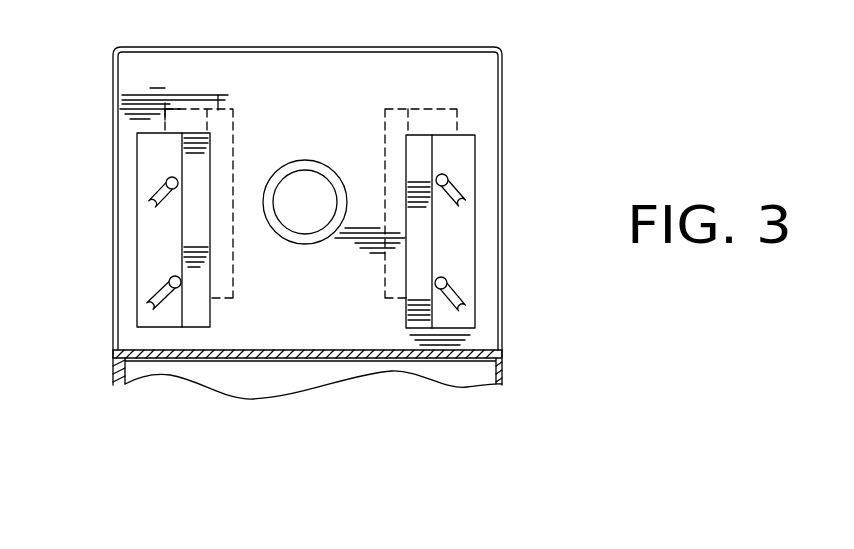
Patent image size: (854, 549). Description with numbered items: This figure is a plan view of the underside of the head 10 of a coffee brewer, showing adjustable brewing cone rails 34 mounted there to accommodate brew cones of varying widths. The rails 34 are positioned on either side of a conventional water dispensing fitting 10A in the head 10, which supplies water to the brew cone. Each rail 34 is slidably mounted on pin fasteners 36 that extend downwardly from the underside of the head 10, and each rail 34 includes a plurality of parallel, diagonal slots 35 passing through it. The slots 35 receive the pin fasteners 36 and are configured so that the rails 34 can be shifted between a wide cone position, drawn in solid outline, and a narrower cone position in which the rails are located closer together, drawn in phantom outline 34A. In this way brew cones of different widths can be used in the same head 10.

The head 10 is at (502, 117).
The water dispensing fitting 10A is at (300, 182).
The adjustable brewing cone rails 34 is at (155, 233).
The phantom outline 34A is at (218, 109).
The diagonal slots 35 is at (152, 200).
The pin fasteners 36 is at (166, 180).